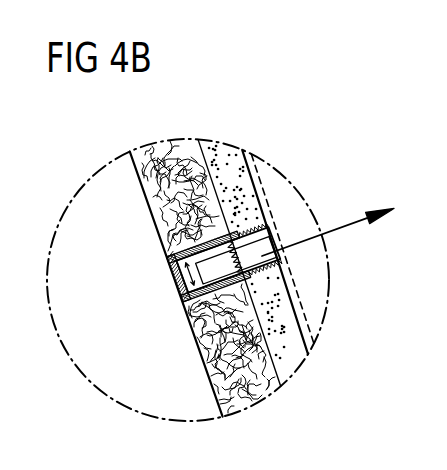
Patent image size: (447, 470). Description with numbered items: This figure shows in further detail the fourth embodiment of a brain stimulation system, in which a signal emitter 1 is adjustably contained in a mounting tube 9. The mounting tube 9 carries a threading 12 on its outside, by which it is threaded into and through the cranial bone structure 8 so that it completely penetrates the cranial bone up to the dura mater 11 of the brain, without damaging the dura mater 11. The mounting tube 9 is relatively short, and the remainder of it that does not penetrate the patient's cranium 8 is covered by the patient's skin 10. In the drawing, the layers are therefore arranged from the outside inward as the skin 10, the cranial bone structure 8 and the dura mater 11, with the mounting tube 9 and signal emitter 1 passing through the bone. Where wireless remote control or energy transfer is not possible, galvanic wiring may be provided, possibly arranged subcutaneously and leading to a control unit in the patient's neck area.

The signal emitter 1 is at (211, 278).
The cranial bone structure 8 is at (215, 142).
The mounting tube 9 is at (168, 264).
The skin 10 is at (143, 148).
The dura mater 11 is at (303, 303).
The threading 12 is at (250, 226).